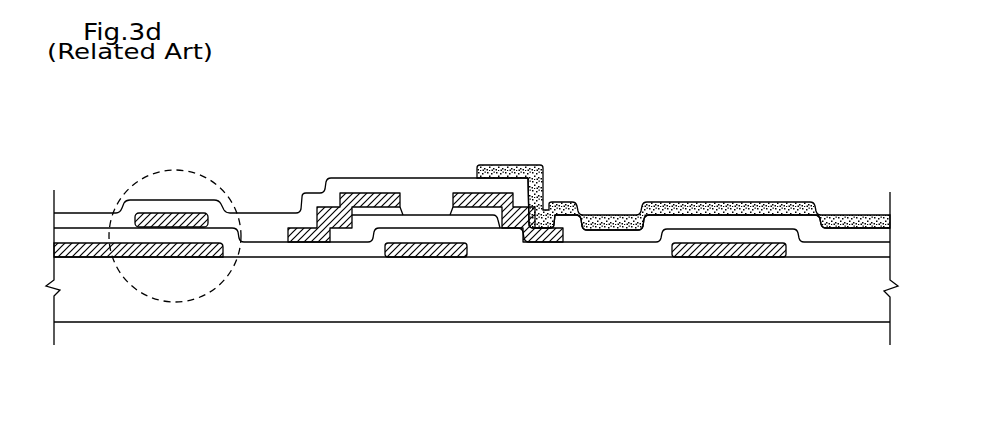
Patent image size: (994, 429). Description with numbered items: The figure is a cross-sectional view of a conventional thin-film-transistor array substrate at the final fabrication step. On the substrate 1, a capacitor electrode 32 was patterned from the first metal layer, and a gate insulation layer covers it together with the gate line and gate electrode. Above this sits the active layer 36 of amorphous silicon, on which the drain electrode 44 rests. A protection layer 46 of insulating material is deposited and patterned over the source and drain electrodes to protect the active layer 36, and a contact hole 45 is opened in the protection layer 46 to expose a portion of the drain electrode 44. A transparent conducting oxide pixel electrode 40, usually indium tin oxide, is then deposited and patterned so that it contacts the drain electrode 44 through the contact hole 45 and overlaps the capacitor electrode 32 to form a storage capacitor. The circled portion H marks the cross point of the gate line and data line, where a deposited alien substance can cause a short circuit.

The substrate 1 is at (471, 303).
The capacitor electrode 32 is at (740, 263).
The active layer 36 is at (413, 218).
The pixel electrode 40 is at (738, 201).
The drain electrode 44 is at (495, 193).
The contact hole 45 is at (553, 208).
The protection layer 46 is at (440, 183).
The portion H is at (143, 176).